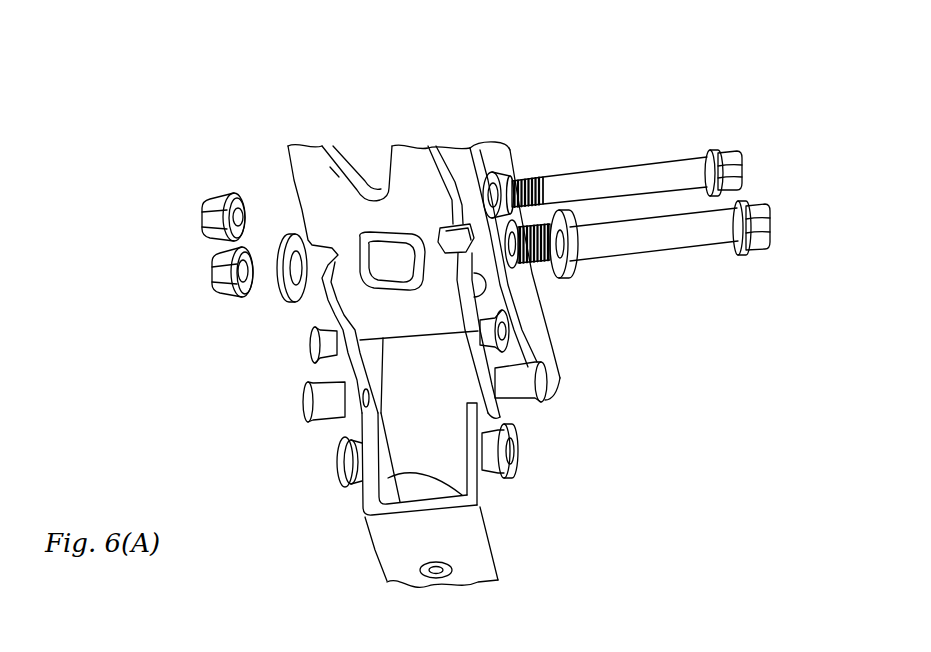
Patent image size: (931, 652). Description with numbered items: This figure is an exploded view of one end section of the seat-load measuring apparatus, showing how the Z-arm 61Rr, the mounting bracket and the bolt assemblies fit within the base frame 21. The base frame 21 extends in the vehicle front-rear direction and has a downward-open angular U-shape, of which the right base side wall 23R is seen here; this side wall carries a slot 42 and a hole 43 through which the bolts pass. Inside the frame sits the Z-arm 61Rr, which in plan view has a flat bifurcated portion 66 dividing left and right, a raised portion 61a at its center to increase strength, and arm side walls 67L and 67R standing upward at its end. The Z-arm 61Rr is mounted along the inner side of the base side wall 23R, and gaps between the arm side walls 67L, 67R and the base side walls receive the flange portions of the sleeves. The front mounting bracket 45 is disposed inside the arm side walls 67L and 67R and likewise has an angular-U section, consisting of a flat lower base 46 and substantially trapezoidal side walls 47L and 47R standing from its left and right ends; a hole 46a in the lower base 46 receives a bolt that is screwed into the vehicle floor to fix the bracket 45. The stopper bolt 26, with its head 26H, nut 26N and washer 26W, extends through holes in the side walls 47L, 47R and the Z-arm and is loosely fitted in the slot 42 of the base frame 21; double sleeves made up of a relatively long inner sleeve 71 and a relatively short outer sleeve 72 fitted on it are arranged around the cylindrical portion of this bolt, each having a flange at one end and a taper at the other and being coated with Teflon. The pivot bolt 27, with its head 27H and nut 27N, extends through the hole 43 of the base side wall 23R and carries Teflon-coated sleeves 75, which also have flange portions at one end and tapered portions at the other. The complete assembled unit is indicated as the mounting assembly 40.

The base frame 21 is at (507, 148).
The right base side wall 23R is at (487, 156).
The stopper bolt 26 is at (687, 240).
The head of stopper bolt 26H is at (752, 209).
The nut of stopper bolt 26N is at (212, 278).
The washer of stopper bolt 26W is at (572, 252).
The pivot bolt (pivot support pin) 27 is at (658, 170).
The head of pivot bolt 27H is at (731, 151).
The nut of pivot bolt 27N is at (202, 215).
The stay assembly 40 is at (637, 435).
The slot 42 is at (520, 215).
The hole 43 is at (502, 185).
The front mounting bracket 45 is at (593, 524).
The lower base 46 is at (488, 583).
The hole 46a is at (442, 578).
The left side wall of front mounting bracket 47L is at (507, 530).
The right side wall of front mounting bracket 47R is at (505, 548).
The raised portion 61a is at (397, 254).
The Z-arm 61Rr is at (293, 148).
The bifurcated portion 66 is at (334, 172).
The left arm side wall 67L is at (340, 368).
The right arm side wall 67R is at (547, 401).
The inner sleeve 71 is at (303, 415).
The outer sleeve 72 is at (347, 488).
The sleeve 75 is at (310, 352).